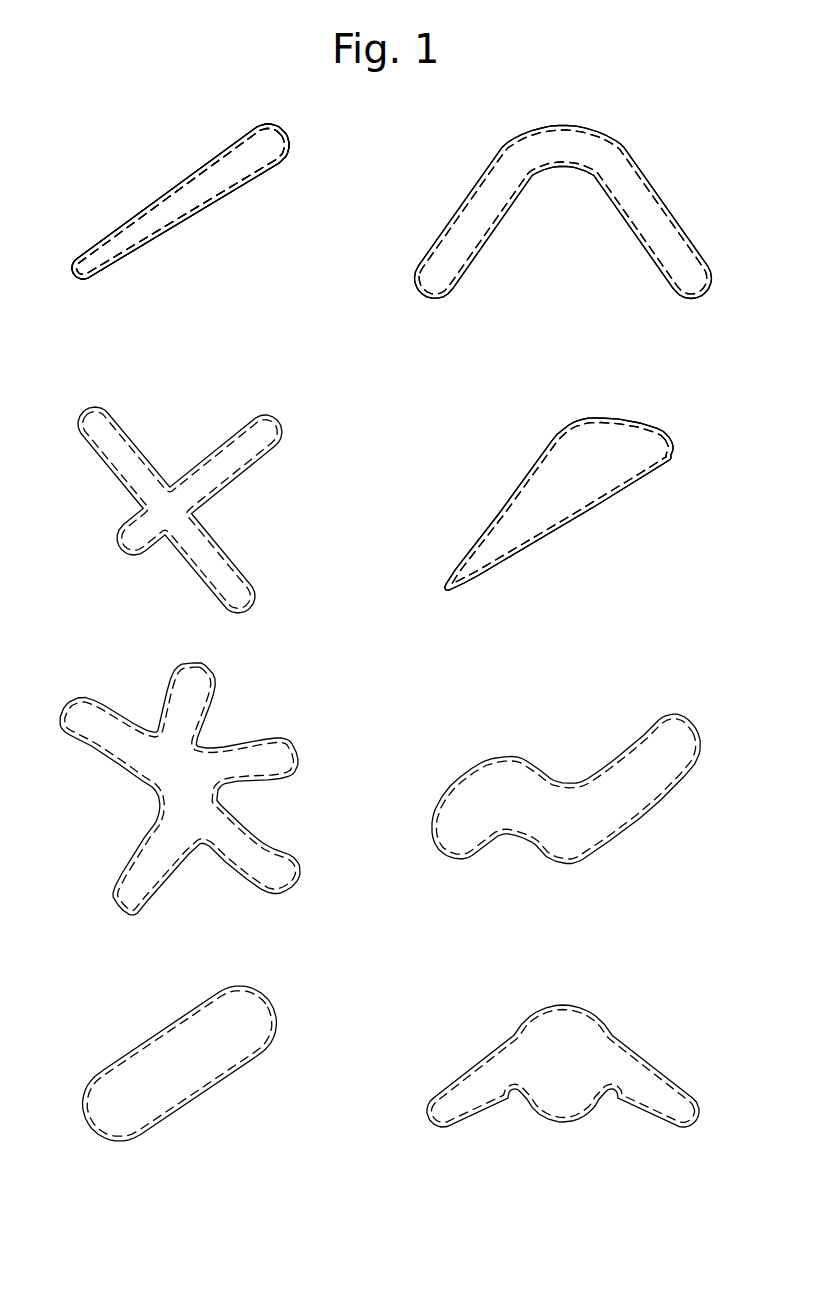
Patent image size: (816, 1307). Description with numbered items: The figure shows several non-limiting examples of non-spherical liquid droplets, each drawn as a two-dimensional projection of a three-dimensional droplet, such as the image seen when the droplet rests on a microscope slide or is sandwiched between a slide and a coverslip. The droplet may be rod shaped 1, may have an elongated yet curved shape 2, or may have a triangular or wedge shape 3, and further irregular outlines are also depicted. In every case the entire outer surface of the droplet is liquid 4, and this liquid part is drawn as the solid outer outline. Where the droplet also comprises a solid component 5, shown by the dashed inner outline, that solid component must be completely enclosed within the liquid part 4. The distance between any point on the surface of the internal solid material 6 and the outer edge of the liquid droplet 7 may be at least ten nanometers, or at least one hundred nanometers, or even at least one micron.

The rod shaped droplet 1 is at (208, 176).
The elongated curved shape droplet 2 is at (660, 167).
The triangular or wedge shape droplet 3 is at (668, 482).
The liquid outer surface 4 is at (248, 192).
The solid component 5 is at (175, 210).
The surface of the internal solid material 6 is at (283, 144).
The outer edge of the liquid droplet 7 is at (280, 127).